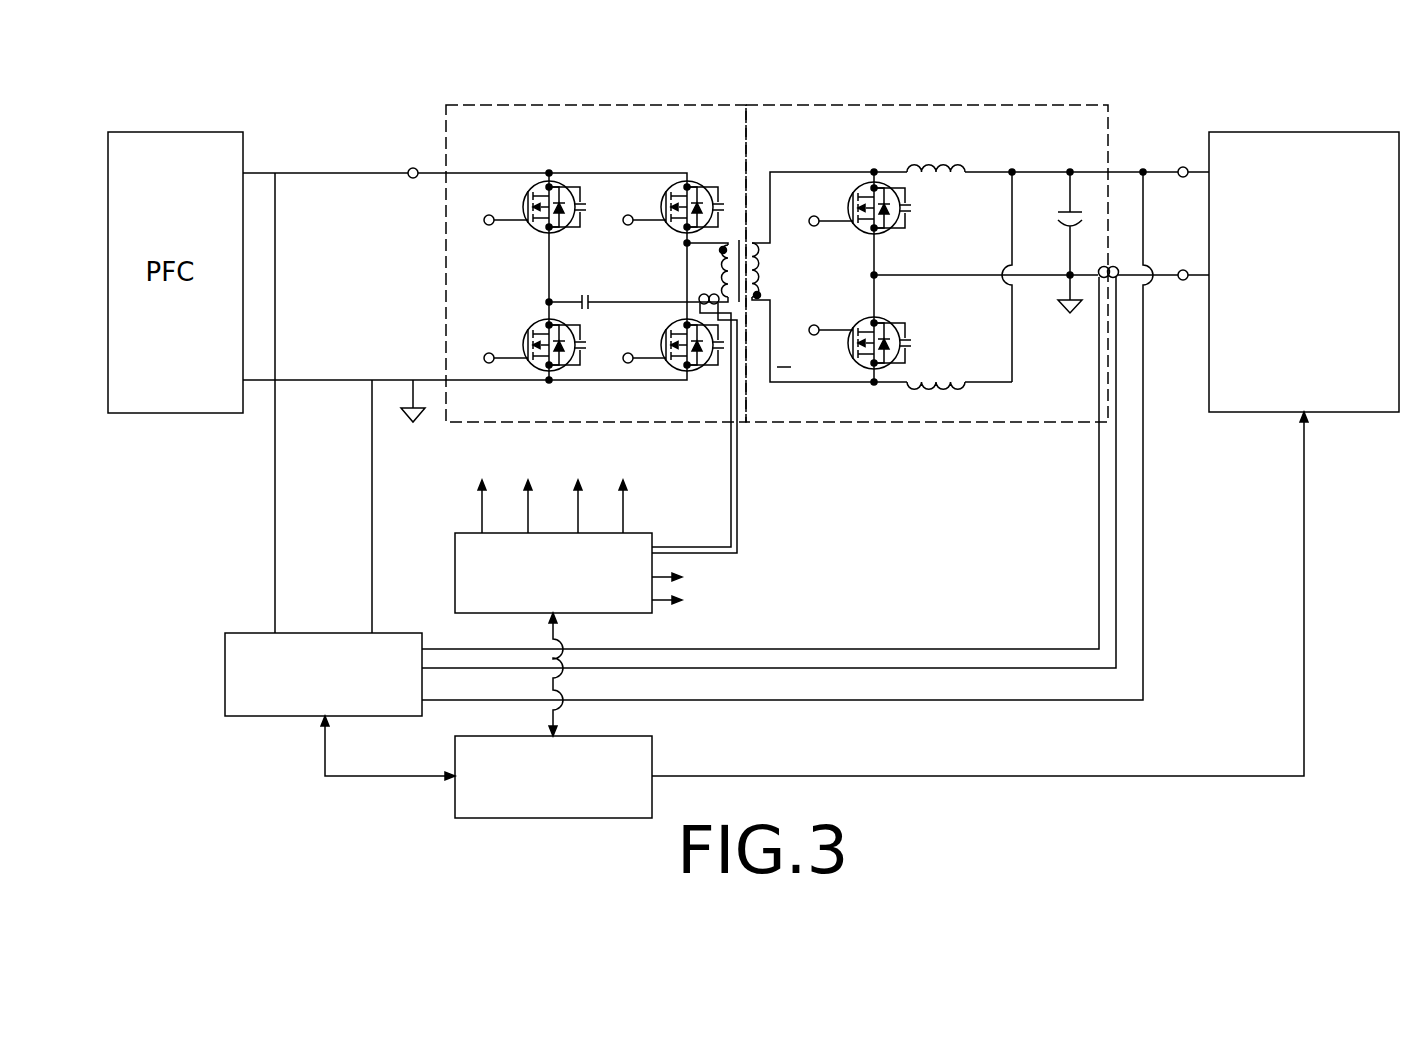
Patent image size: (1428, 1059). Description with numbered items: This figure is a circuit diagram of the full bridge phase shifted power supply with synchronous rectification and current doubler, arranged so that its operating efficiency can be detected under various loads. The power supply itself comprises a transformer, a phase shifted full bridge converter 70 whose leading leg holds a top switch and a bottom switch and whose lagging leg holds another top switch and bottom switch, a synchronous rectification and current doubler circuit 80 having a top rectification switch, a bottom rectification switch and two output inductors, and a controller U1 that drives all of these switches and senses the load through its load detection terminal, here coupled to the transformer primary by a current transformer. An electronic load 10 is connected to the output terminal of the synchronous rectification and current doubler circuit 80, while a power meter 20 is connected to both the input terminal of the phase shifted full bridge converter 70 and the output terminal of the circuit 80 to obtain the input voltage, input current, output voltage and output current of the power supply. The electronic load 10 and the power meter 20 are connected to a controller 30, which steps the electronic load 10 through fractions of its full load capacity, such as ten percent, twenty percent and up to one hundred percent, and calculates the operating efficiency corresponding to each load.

The electronic load 10 is at (1255, 132).
The power meter 20 is at (283, 716).
The controller 30 is at (652, 753).
The phase shifted full bridge converter 70 is at (567, 105).
The synchronous rectification and current doubler circuit 80 is at (888, 105).
The controller U1 is at (455, 547).